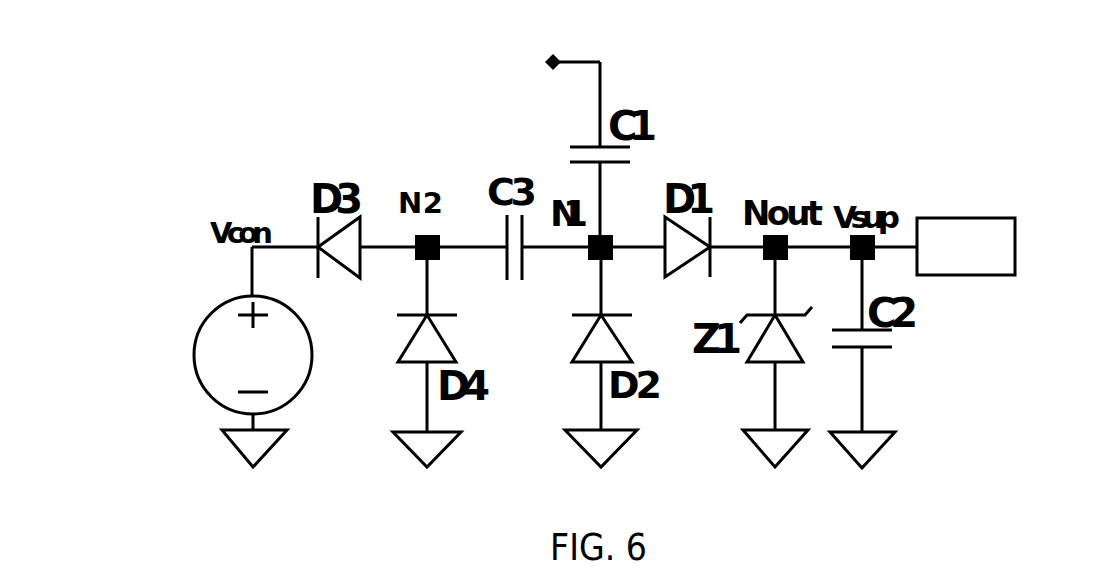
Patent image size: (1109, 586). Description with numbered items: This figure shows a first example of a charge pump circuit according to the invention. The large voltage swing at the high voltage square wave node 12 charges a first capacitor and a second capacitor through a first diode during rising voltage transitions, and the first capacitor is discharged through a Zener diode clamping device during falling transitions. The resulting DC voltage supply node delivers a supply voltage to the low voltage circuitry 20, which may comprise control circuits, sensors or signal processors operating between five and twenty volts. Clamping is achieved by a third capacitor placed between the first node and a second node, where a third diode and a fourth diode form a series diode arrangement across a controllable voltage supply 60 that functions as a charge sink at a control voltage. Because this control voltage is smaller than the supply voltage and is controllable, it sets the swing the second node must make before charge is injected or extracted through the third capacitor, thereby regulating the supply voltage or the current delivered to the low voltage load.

The high voltage square wave node 12 is at (543, 63).
The low voltage circuitry 20 is at (997, 218).
The controllable voltage supply 60 is at (210, 310).